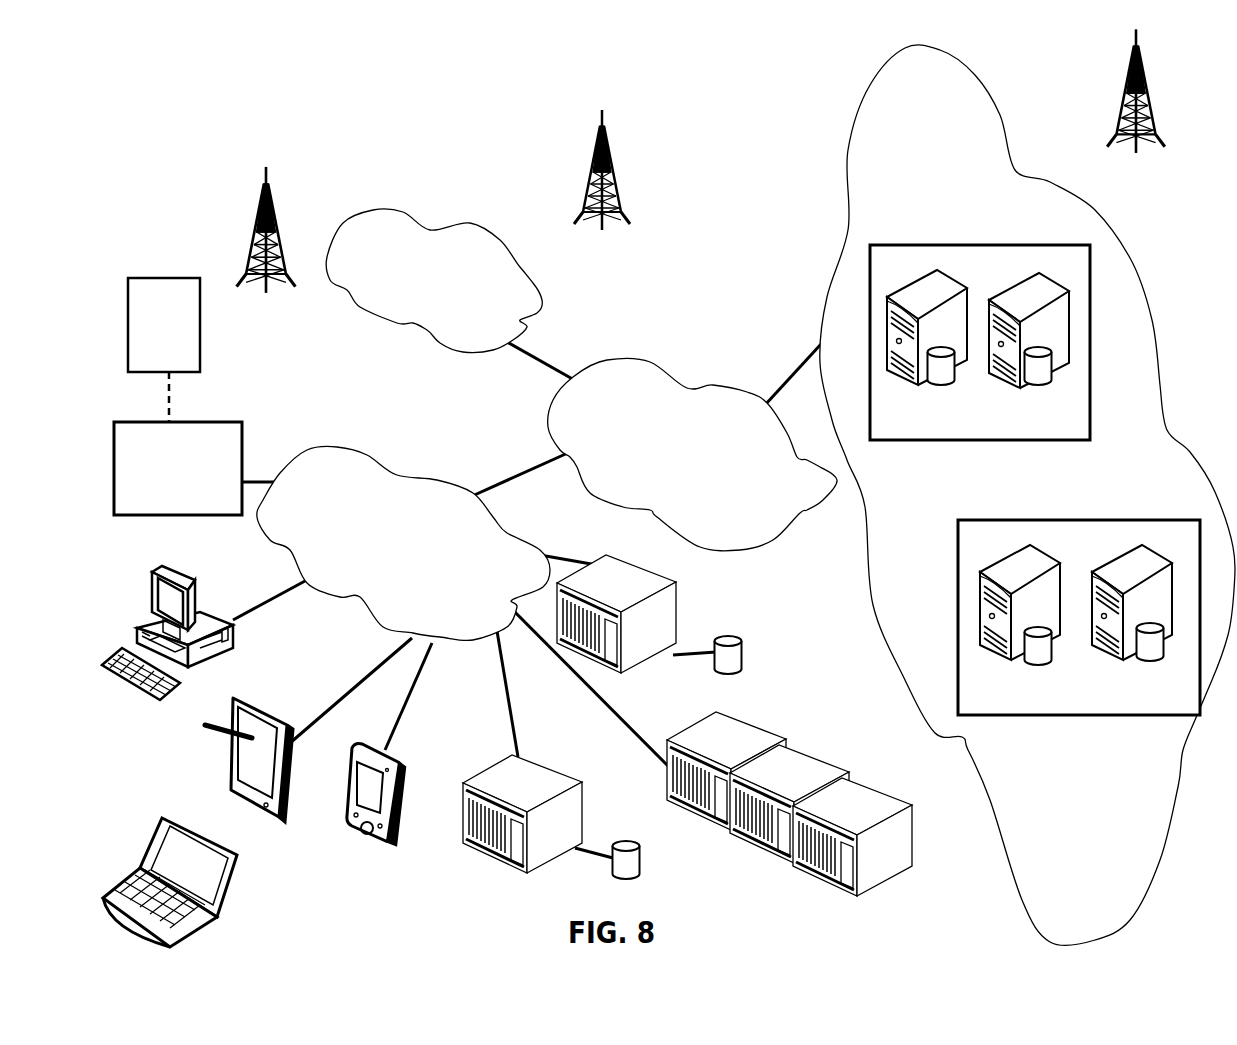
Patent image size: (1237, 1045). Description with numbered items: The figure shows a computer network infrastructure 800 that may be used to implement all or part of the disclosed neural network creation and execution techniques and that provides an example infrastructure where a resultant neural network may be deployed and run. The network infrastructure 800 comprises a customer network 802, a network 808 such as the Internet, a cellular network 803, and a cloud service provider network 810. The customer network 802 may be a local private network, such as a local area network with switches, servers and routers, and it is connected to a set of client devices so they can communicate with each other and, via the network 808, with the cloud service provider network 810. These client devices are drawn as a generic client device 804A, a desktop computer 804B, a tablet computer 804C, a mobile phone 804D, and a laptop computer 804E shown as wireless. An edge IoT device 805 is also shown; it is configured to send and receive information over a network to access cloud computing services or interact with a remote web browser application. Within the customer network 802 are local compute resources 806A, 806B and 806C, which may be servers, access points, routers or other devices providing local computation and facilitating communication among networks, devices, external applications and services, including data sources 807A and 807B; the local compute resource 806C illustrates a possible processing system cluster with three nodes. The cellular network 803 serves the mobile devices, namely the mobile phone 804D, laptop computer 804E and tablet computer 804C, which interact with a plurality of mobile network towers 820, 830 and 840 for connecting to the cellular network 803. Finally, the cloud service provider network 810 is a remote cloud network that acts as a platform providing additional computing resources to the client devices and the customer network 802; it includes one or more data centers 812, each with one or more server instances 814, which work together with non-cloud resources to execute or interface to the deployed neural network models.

The network infrastructure 800 is at (340, 134).
The customer network 802 is at (370, 455).
The cellular network 803 is at (458, 233).
The client device 804A is at (205, 422).
The desktop computer 804B is at (182, 580).
The tablet computer 804C is at (260, 702).
The mobile phone 804D is at (403, 742).
The laptop computer 804E is at (230, 857).
The edge IoT device 805 is at (142, 278).
The local compute resource 806A is at (525, 780).
The local compute resource 806B is at (673, 607).
The local compute resource 806C is at (742, 725).
The data source 807A is at (640, 870).
The data source 807B is at (742, 650).
The network 808 is at (628, 357).
The cloud service provider network 810 is at (1125, 260).
The data center 812 is at (910, 245).
The server instance 814 is at (933, 383).
The mobile network tower 820 is at (602, 191).
The mobile network tower 830 is at (266, 249).
The mobile network tower 840 is at (1136, 108).